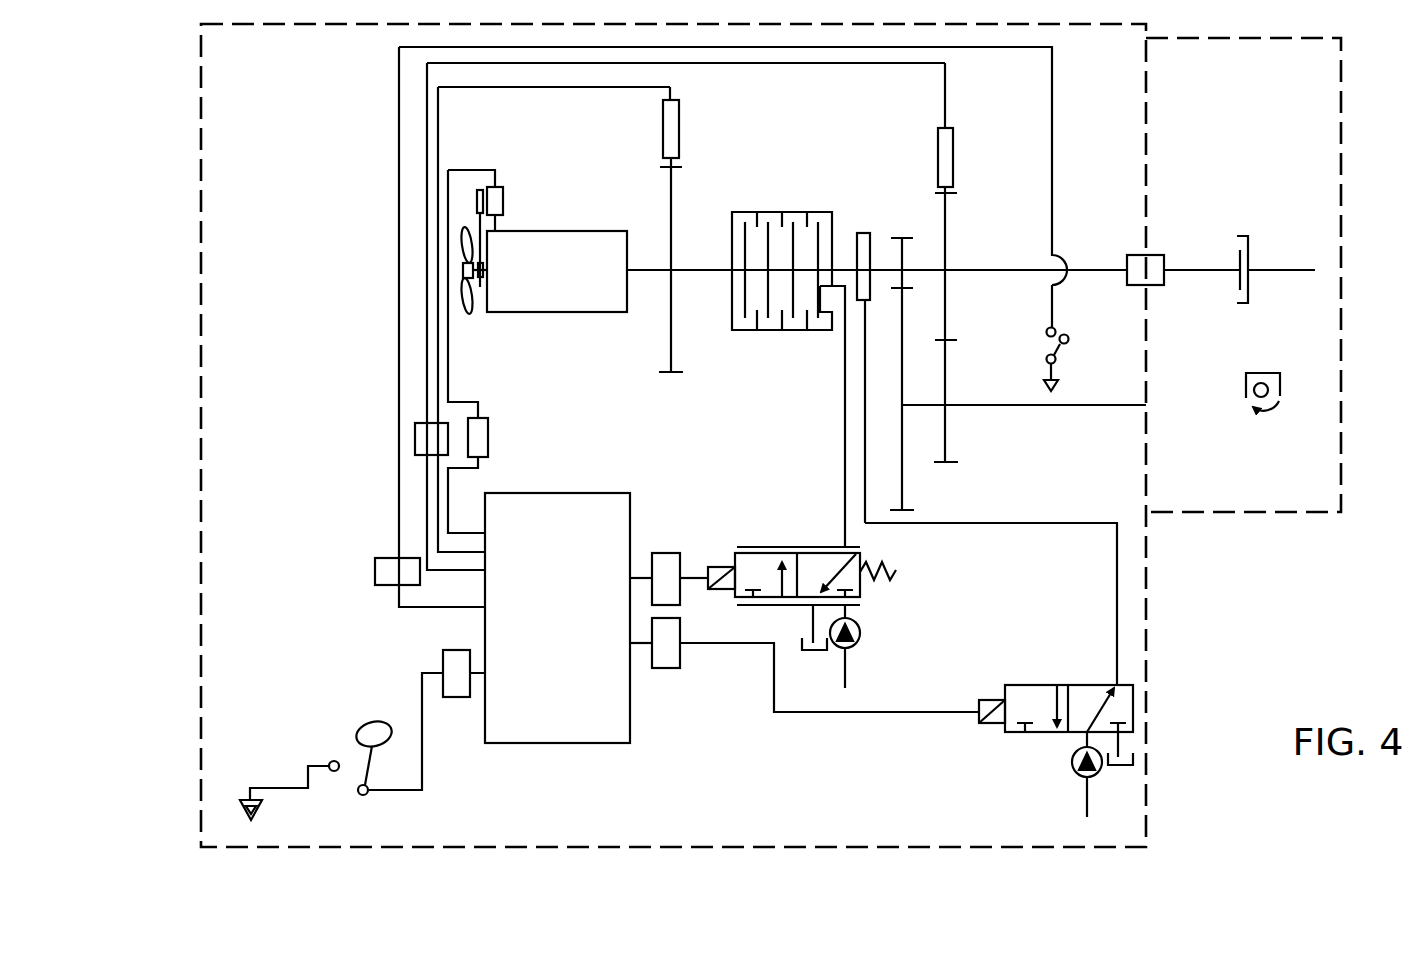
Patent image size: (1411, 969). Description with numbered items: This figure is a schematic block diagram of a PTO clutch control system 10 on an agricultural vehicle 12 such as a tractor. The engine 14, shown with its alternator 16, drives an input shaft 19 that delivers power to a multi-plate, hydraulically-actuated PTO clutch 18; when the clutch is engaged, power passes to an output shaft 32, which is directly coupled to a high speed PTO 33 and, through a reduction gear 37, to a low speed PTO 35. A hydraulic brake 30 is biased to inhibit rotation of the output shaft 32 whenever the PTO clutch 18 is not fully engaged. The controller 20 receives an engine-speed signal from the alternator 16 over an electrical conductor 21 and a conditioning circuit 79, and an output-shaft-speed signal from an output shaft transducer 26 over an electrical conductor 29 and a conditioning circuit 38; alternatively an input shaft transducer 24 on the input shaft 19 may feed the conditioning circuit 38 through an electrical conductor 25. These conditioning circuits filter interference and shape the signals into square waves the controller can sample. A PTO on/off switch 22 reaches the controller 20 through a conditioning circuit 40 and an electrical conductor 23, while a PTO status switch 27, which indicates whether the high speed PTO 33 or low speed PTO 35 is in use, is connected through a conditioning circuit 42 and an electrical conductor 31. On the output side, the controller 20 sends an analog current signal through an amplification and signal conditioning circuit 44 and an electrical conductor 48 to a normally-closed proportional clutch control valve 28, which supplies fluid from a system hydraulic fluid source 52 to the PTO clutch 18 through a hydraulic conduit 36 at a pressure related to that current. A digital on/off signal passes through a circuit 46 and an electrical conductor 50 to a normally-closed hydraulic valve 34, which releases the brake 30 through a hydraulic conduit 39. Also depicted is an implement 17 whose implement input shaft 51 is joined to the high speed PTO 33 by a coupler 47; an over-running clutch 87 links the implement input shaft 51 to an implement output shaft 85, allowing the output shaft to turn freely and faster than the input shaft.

The PTO clutch control system 10 is at (742, 730).
The agricultural vehicle 12 is at (1160, 776).
The engine 14 is at (560, 229).
The alternator 16 is at (503, 188).
The implement 17 is at (1272, 528).
The PTO clutch 18 is at (785, 210).
The input shaft 19 is at (707, 268).
The controller 20 is at (560, 493).
The electrical conductor 21 is at (451, 383).
The PTO on/off switch 22 is at (384, 778).
The electrical conductor 23 is at (393, 792).
The input shaft transducer 24 is at (680, 126).
The electrical conductor 25 is at (440, 130).
The output shaft transducer 26 is at (955, 155).
The PTO status switch 27 is at (1067, 335).
The clutch control valve 28 is at (768, 547).
The electrical conductor 29 is at (785, 64).
The hydraulic brake 30 is at (862, 232).
The electrical conductor 31 is at (1054, 150).
The output shaft 32 is at (887, 270).
The high speed PTO 33 is at (1098, 268).
The hydraulic valve 34 is at (1045, 684).
The low speed PTO 35 is at (1094, 407).
The hydraulic conduit 36 is at (843, 420).
The reduction gear 37 is at (906, 318).
The conditioning circuit 38 is at (413, 437).
The hydraulic conduit 39 is at (994, 522).
The conditioning circuit 40 is at (456, 649).
The conditioning circuit 42 is at (373, 570).
The amplification and signal conditioning circuit 44 is at (664, 552).
The amplification and signal conditioning circuit 46 is at (668, 670).
The coupler 47 is at (1168, 288).
The electrical conductor 48 is at (694, 565).
The electrical conductor 50 is at (826, 714).
The implement input shaft 51 is at (1200, 268).
The system hydraulic fluid source 52 is at (861, 631).
The conditioning circuit 79 is at (489, 437).
The implement output shaft 85 is at (1290, 273).
The over-running clutch 87 is at (1244, 233).